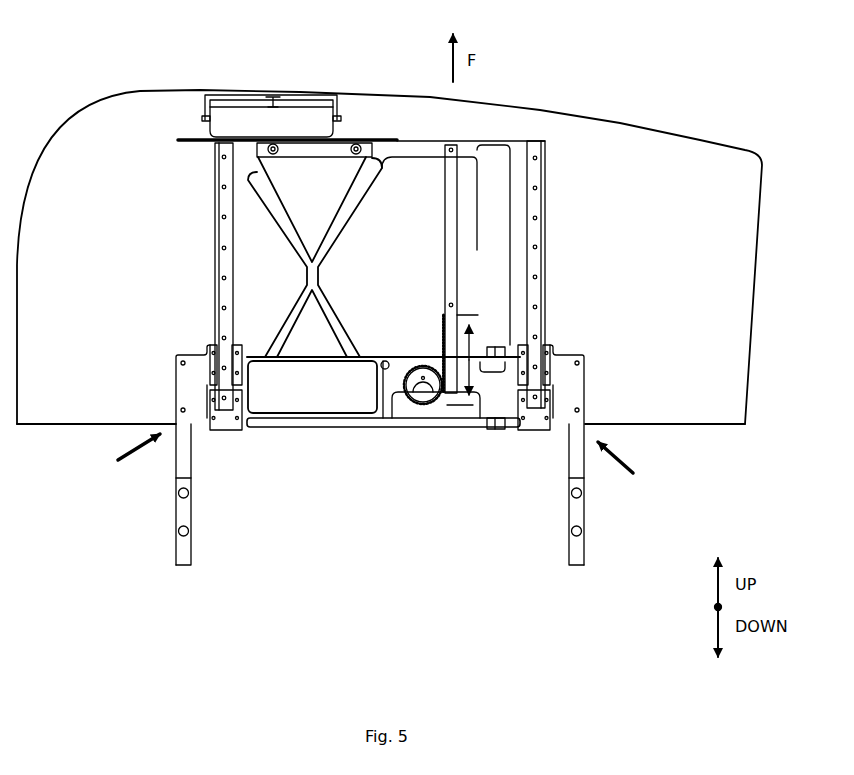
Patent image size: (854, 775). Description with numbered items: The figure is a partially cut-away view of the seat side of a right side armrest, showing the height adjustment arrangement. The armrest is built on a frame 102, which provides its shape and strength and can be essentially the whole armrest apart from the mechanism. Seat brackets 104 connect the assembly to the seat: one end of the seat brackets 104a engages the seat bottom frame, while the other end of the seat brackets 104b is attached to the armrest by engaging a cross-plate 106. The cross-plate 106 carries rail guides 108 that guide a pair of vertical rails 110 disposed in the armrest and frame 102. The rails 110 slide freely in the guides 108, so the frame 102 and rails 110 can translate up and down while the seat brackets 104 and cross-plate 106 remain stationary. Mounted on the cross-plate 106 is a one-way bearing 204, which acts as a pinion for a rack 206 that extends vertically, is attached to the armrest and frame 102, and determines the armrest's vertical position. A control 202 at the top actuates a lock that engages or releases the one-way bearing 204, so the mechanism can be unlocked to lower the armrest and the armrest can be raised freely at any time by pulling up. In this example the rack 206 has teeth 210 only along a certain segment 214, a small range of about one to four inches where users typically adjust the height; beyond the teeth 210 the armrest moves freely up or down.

The frame 102 is at (625, 140).
The seat brackets 104 is at (193, 463).
The end of the seat brackets 104a is at (180, 510).
The other end of the seat brackets 104b is at (376, 463).
The cross-plate 106 is at (317, 400).
The rail guides 108 is at (238, 428).
The rails 110 is at (221, 255).
The control 202 is at (238, 113).
The one-way bearing 204 is at (403, 367).
The rack 206 is at (445, 285).
The teeth 210 is at (443, 317).
The segment 214 is at (470, 352).